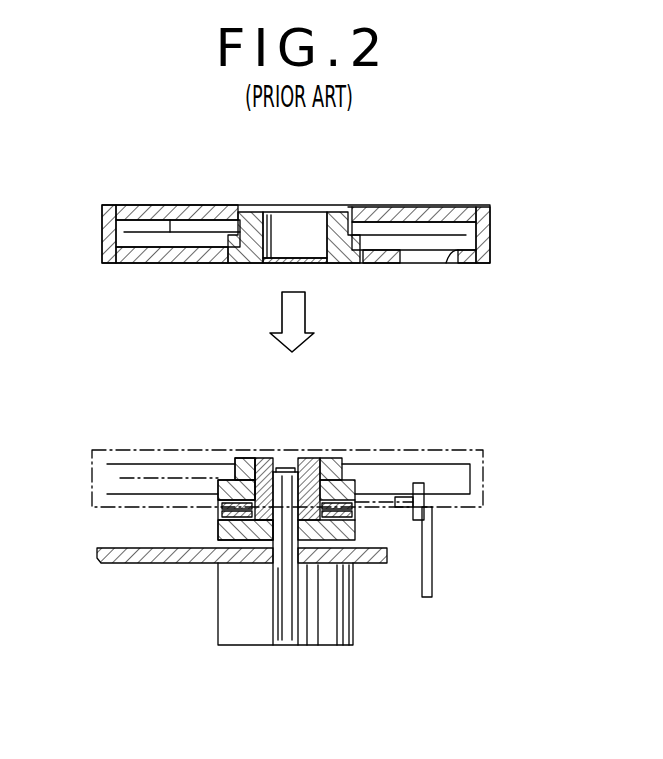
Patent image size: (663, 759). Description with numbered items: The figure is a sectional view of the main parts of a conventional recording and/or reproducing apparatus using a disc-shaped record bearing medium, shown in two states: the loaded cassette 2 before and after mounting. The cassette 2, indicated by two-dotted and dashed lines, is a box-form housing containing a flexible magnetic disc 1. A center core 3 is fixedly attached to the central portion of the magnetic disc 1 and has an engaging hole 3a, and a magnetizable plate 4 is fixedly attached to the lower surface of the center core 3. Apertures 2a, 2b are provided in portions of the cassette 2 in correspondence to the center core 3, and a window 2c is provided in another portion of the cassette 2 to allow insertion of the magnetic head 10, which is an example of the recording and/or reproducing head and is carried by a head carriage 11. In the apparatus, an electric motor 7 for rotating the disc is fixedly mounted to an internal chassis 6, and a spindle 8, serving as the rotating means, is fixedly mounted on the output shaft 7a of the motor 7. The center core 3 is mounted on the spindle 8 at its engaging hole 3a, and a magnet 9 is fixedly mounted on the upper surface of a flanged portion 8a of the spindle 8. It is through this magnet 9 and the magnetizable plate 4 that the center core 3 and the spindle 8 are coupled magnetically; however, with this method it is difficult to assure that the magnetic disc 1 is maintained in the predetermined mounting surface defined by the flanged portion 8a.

The flexible magnetic disc 1 is at (160, 208).
The cassette 2 is at (126, 206).
The aperture 2a is at (238, 207).
The aperture 2b is at (362, 264).
The window 2c is at (441, 264).
The center core 3 is at (258, 210).
The engaging hole 3a is at (305, 210).
The magnetizable plate 4 is at (244, 264).
The internal chassis 6 is at (142, 565).
The electric motor 7 is at (217, 628).
The output shaft 7a is at (278, 646).
The spindle 8 is at (271, 457).
The flanged portion 8a is at (327, 646).
The magnet 9 is at (216, 532).
The magnetic head 10 is at (426, 512).
The head carriage 11 is at (430, 592).